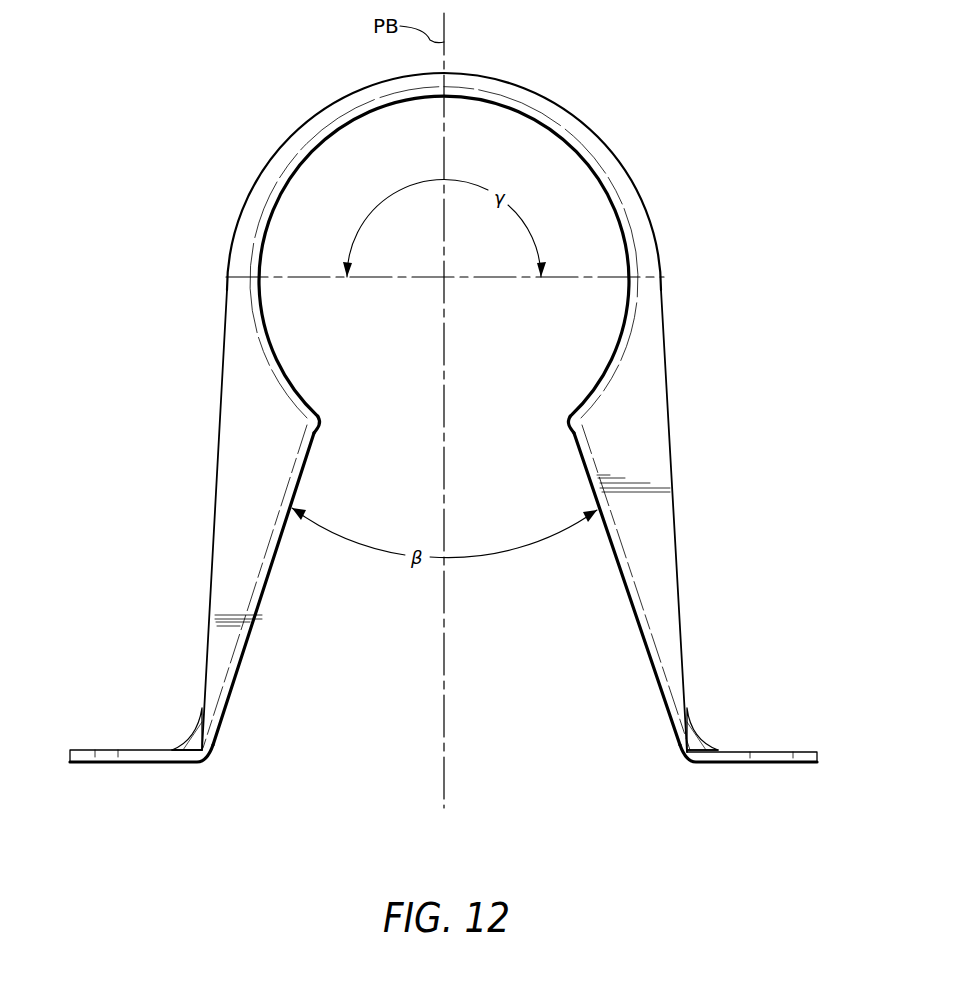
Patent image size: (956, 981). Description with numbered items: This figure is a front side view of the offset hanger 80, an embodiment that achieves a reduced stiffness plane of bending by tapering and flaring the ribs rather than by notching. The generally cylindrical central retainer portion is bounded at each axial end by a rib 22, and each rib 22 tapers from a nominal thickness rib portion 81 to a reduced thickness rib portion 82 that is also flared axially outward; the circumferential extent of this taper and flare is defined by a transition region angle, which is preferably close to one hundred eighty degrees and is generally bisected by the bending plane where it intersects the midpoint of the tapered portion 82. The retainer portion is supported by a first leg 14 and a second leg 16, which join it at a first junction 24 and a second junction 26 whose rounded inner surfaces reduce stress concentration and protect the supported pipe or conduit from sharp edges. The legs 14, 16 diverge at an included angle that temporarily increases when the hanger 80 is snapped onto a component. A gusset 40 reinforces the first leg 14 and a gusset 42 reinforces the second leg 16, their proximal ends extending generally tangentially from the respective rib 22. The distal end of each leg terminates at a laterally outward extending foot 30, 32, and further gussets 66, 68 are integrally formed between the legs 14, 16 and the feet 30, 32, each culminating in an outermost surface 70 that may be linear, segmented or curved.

The offset hanger 80 is at (718, 190).
The reduced thickness rib portion 82 is at (485, 78).
The nominal thickness rib portion 81 is at (241, 240).
The rib 22 is at (627, 162).
The first junction 24 is at (318, 424).
The second junction 26 is at (572, 424).
The gusset 40 is at (230, 437).
The gusset 42 is at (660, 432).
The first leg 14 is at (206, 640).
The second leg 16 is at (697, 638).
The foot 30 is at (92, 750).
The foot 32 is at (797, 752).
The gusset 66 is at (196, 712).
The gusset 68 is at (695, 716).
The outermost surface 70 is at (178, 748).